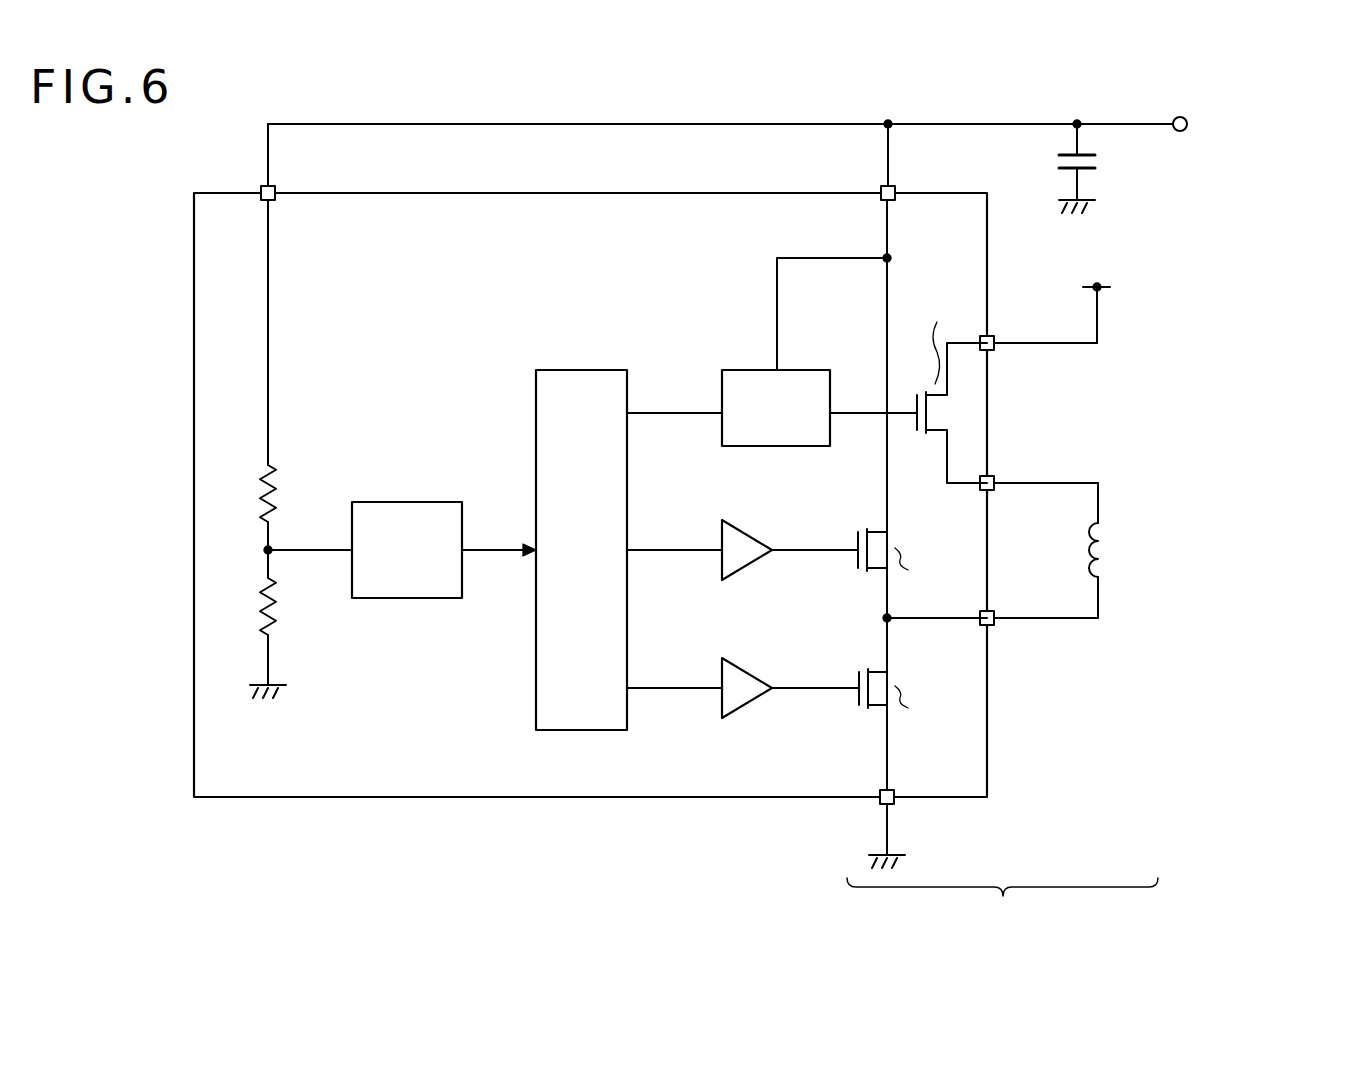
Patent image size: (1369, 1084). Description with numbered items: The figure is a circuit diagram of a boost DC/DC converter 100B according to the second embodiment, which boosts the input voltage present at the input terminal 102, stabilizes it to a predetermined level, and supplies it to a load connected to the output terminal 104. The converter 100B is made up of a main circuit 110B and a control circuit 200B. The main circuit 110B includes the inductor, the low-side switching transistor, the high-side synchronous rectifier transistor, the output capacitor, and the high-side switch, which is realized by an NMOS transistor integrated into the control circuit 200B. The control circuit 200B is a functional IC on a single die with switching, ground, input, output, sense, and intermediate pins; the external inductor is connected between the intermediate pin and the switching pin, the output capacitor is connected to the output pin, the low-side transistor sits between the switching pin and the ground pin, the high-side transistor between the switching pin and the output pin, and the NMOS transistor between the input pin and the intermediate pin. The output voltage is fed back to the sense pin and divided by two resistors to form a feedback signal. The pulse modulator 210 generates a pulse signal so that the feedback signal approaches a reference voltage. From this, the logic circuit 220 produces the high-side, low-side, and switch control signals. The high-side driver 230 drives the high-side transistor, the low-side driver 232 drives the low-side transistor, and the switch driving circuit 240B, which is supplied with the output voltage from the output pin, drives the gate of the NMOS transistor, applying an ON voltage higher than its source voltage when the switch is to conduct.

The boost DC/DC converter 100B is at (1368, 101).
The input terminal 102 is at (1105, 289).
The output terminal 104 is at (1187, 118).
The main circuit 110B is at (1002, 907).
The control circuit 200B is at (578, 193).
The pulse modulator 210 is at (408, 502).
The logic circuit 220 is at (577, 370).
The high-side driver 230 is at (745, 532).
The low-side driver 232 is at (745, 670).
The switch driving circuit 240B is at (740, 370).